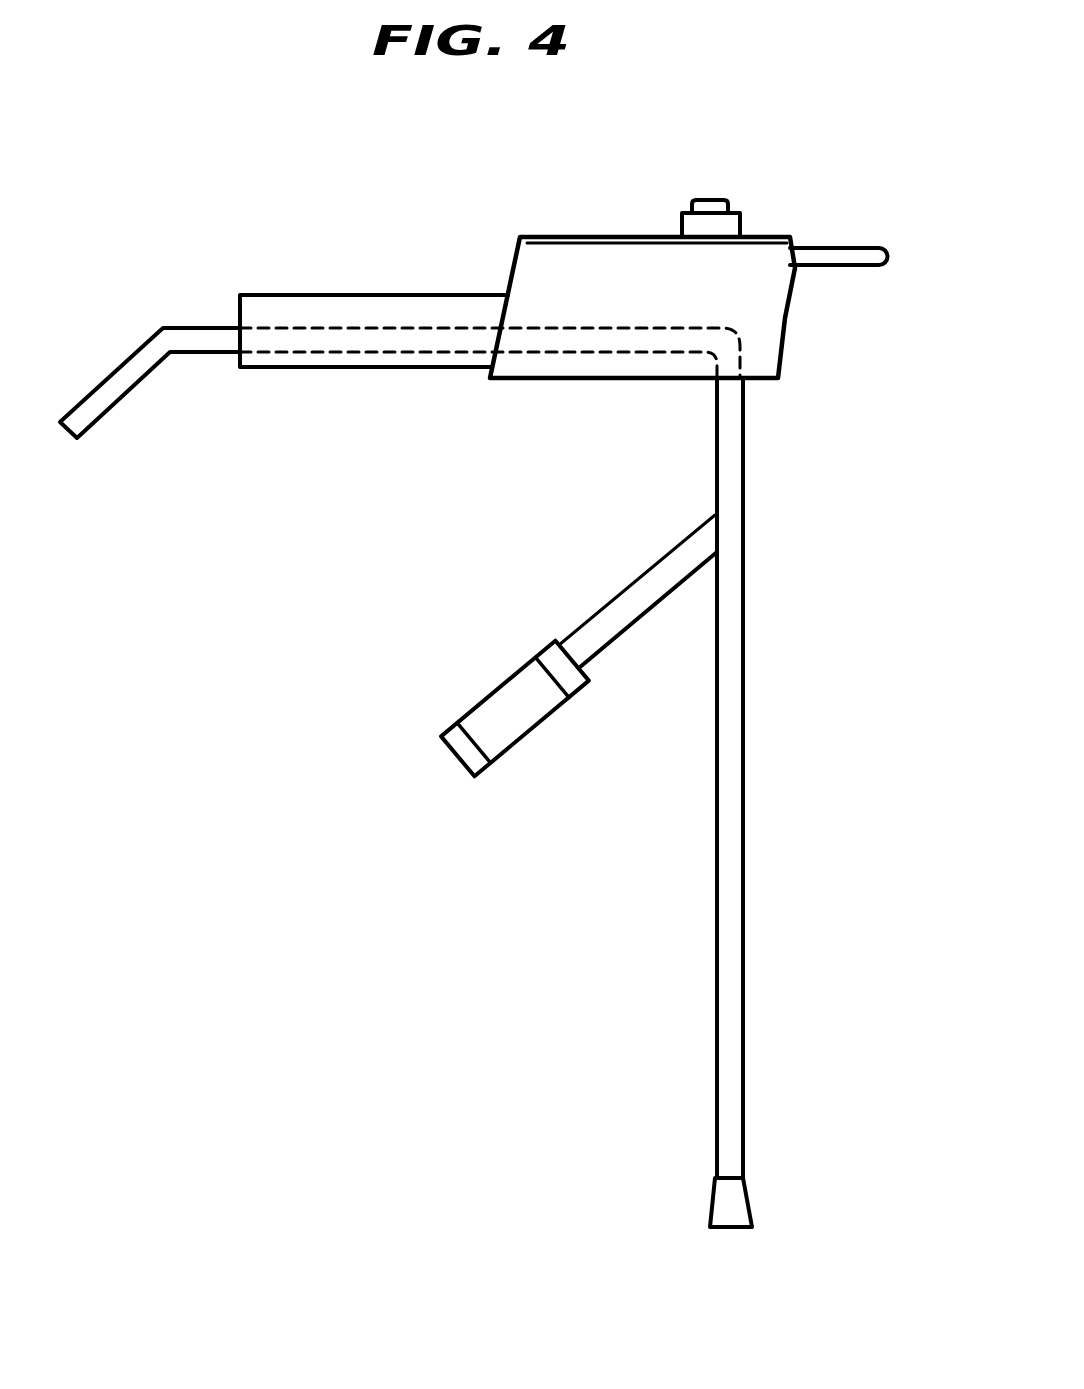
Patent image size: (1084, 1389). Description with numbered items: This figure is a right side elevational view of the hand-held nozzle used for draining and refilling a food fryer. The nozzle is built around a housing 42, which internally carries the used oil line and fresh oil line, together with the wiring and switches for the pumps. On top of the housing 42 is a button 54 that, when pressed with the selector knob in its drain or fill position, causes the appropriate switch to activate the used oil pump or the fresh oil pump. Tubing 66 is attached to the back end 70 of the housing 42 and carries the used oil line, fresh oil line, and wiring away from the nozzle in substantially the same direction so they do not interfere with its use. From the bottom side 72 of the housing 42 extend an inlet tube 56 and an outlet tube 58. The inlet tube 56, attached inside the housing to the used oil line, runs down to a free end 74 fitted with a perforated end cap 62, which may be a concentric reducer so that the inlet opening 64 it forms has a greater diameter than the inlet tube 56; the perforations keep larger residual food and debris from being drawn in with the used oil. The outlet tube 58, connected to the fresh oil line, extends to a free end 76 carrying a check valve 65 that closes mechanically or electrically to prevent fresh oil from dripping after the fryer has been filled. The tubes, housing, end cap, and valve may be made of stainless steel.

The housing 42 is at (773, 322).
The button 54 is at (708, 200).
The inlet tube 56 is at (732, 775).
The outlet tube 58 is at (610, 603).
The perforated end cap 62 is at (732, 1203).
The inlet opening 64 is at (725, 1230).
The check valve 65 is at (475, 720).
The tubing 66 is at (295, 303).
The back end 70 is at (502, 264).
The bottom side 72 is at (640, 386).
The free end 74 is at (781, 1151).
The free end 76 is at (580, 696).